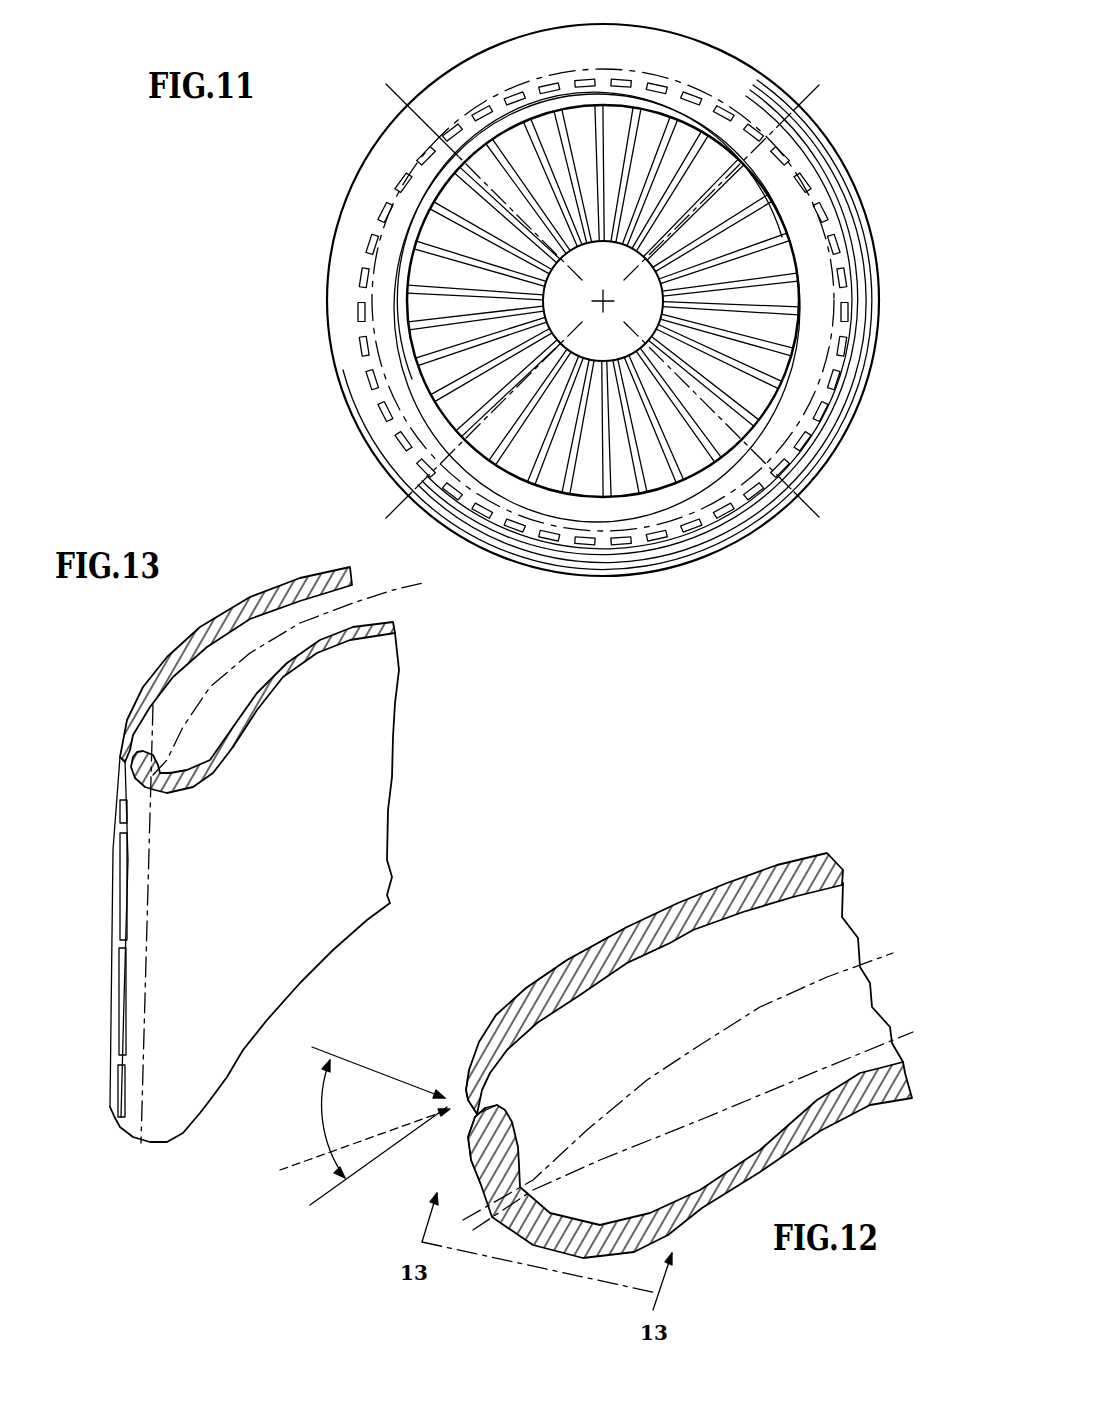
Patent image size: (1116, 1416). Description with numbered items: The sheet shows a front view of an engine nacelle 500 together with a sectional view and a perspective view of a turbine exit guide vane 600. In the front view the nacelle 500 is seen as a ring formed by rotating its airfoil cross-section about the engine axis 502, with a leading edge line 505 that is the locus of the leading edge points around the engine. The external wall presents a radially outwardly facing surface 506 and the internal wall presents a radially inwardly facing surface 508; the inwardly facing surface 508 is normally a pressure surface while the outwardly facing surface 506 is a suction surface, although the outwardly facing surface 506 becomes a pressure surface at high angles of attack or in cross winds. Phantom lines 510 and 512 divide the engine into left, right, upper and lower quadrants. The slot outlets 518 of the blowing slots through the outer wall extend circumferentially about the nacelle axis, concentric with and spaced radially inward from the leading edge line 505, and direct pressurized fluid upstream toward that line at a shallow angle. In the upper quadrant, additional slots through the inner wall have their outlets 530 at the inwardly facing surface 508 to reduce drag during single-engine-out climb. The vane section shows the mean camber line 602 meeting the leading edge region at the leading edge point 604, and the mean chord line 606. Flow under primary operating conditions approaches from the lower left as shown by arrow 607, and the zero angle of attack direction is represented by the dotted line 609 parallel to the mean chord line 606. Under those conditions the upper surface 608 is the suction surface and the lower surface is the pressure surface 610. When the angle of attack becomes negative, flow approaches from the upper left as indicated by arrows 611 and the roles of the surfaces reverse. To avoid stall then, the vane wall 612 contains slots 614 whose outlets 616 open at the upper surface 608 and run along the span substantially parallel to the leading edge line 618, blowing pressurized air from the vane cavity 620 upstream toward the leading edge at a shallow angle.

In FIG. 11, the nacelle 500 is at (275, 186).
In FIG. 11, the axis 502 is at (603, 298).
In FIG. 11, the leading edge line 505 is at (723, 102).
In FIG. 11, the radially outwardly facing surface 506 is at (715, 68).
In FIG. 11, the radially inwardly facing surface 508 is at (440, 383).
In FIG. 11, the phantom line 510 is at (384, 88).
In FIG. 11, the phantom line 512 is at (397, 512).
In FIG. 11, the slot outlets 518 is at (846, 292).
In FIG. 11, the outlets 530 is at (660, 82).
In FIG. 13, the guide vane 600 is at (158, 656).
In FIG. 12, the guide vane 600 is at (668, 890).
In FIG. 13, the mean camber line 602 is at (203, 697).
In FIG. 12, the mean camber line 602 is at (820, 983).
In FIG. 13, the leading edge point 604 is at (150, 795).
In FIG. 12, the leading edge point 604 is at (492, 1197).
In FIG. 12, the mean chord line 606 is at (767, 1088).
In FIG. 12, the arrow 607 is at (312, 1202).
In FIG. 12, the upper surface 608 is at (627, 927).
In FIG. 12, the dotted line 609 is at (295, 1160).
In FIG. 12, the pressure surface 610 is at (835, 1142).
In FIG. 12, the arrows 611 is at (363, 1062).
In FIG. 13, the vane wall 612 is at (236, 664).
In FIG. 12, the vane wall 612 is at (750, 890).
In FIG. 12, the slots 614 is at (471, 1085).
In FIG. 13, the outlets 616 is at (112, 966).
In FIG. 12, the outlets 616 is at (467, 1130).
In FIG. 13, the leading edge line 618 is at (150, 950).
In FIG. 12, the vane cavity 620 is at (628, 1055).